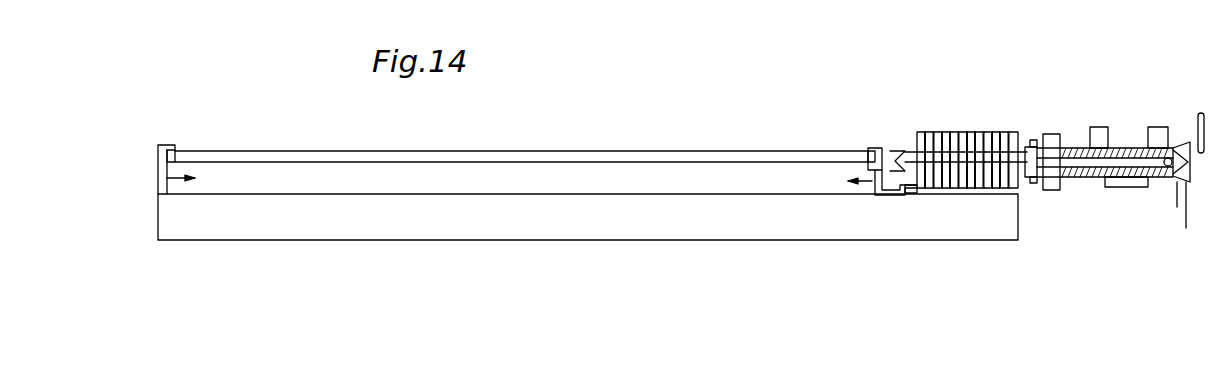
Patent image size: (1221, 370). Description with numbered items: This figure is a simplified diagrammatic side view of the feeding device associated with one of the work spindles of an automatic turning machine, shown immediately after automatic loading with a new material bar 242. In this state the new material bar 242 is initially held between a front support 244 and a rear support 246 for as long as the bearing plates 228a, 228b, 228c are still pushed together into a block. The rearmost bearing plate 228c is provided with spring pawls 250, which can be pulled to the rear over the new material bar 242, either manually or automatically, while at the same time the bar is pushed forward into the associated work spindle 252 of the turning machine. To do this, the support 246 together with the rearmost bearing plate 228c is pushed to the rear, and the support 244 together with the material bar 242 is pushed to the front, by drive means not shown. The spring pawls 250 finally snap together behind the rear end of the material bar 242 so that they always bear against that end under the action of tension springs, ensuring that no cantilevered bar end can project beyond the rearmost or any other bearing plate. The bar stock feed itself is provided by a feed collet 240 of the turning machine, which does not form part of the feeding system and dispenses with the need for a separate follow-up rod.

The material bar 242 is at (555, 152).
The support 244 is at (165, 145).
The support 246 is at (875, 148).
The spring pawls 250 is at (908, 184).
The bearing plate 228a is at (1015, 134).
The bearing plate 228b is at (980, 142).
The rearmost bearing plate 228c is at (922, 133).
The work spindle 252 is at (1085, 184).
The feed collet 240 is at (1173, 152).